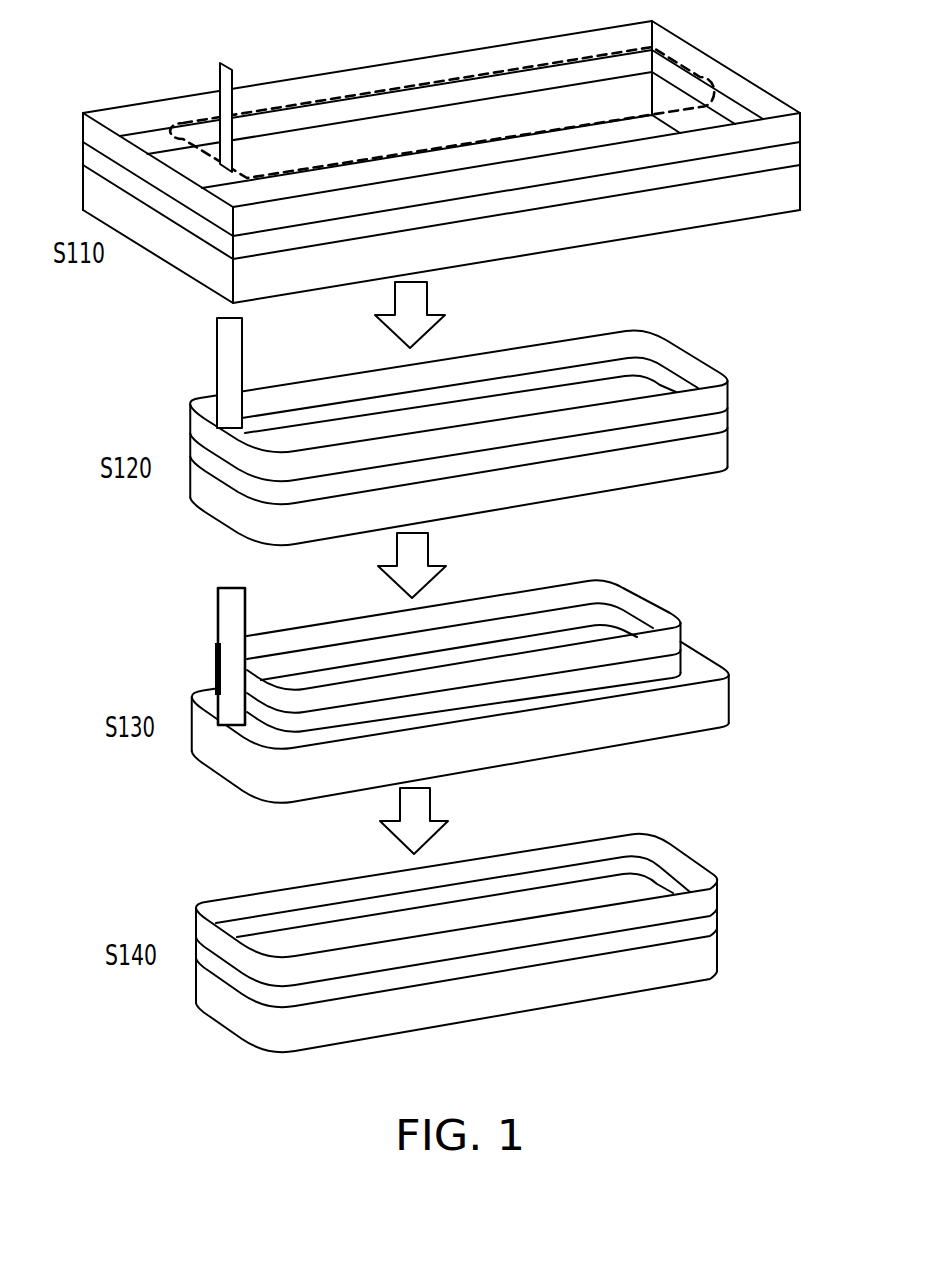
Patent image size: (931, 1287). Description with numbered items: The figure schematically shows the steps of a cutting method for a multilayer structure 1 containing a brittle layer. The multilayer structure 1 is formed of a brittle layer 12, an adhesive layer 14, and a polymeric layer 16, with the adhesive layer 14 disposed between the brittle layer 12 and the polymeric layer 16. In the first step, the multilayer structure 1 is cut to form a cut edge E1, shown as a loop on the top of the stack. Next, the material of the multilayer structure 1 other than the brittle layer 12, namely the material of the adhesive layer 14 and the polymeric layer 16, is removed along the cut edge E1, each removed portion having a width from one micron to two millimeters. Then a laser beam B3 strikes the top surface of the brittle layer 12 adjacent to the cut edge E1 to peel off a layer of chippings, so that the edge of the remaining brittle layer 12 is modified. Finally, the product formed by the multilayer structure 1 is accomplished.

The multilayer structure 1 is at (740, 52).
The brittle layer 12 is at (793, 195).
The adhesive layer 14 is at (793, 155).
The polymeric layer 16 is at (790, 127).
The cut edge E1 is at (180, 118).
The laser beam B3 is at (230, 630).